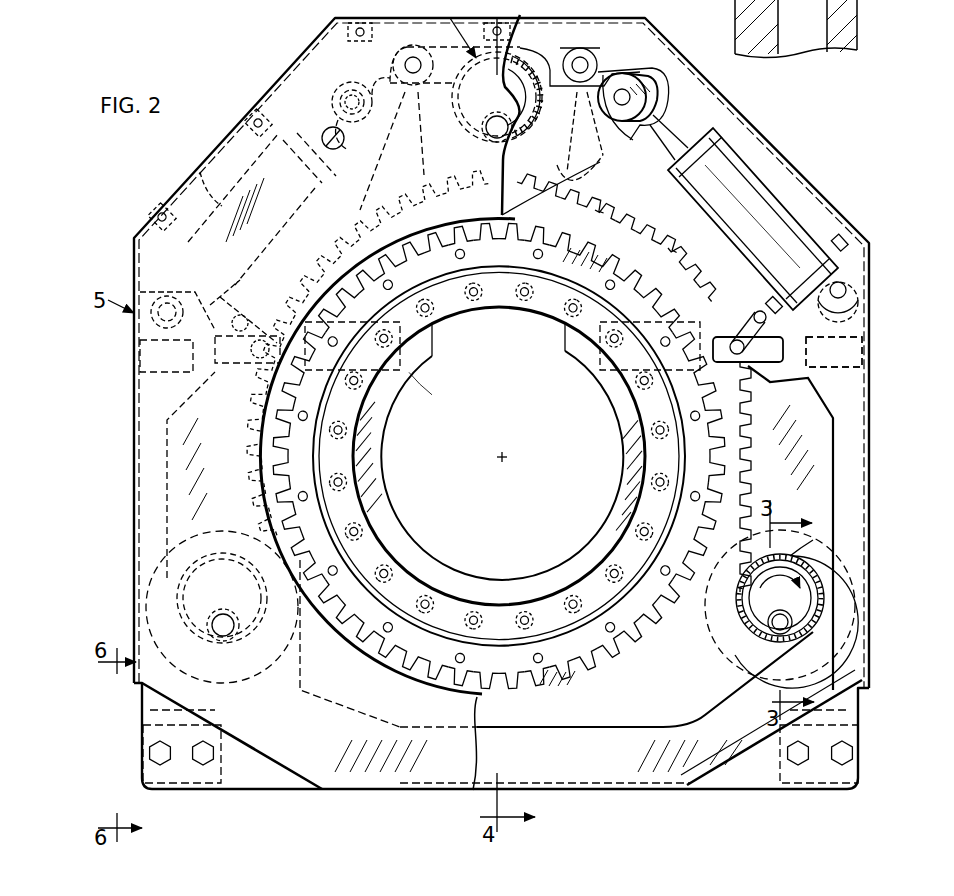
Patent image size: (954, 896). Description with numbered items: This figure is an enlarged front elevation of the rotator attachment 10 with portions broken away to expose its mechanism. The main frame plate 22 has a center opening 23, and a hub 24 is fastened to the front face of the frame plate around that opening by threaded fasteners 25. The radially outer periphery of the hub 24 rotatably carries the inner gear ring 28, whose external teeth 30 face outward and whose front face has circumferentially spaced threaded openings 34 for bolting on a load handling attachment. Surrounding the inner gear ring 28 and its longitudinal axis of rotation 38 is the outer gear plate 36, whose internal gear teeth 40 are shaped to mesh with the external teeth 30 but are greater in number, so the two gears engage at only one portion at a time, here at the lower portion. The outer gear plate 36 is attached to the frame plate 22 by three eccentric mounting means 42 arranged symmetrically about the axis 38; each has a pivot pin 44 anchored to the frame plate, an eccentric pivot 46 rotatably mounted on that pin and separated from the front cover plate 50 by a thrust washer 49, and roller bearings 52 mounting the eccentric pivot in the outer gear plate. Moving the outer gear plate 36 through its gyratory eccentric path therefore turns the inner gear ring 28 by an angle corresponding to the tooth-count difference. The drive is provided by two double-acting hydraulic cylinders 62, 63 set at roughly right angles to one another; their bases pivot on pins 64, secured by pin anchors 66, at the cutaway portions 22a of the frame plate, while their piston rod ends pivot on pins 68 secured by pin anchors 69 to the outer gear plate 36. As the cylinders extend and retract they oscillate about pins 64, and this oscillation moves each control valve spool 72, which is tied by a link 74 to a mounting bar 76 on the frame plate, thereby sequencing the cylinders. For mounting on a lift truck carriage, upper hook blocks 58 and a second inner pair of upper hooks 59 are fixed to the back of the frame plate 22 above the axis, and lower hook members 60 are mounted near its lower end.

The rotator attachment 10 is at (266, 87).
The main frame plate 22 is at (240, 792).
The cutaway portions of frame plate 22a is at (758, 398).
The center opening 23 is at (522, 578).
The hub 24 is at (464, 600).
The threaded fasteners 25 is at (395, 516).
The inner gear ring 28 is at (590, 672).
The external teeth 30 is at (468, 680).
The threaded openings 34 is at (530, 240).
The outer gear plate 36 is at (576, 730).
The longitudinal axis of rotation 38 is at (497, 457).
The internal gear teeth 40 is at (556, 680).
The eccentric mounting means 42 is at (218, 550).
The pivot pin 44 is at (490, 127).
The eccentric pivot 46 is at (848, 602).
The thrust washer 49 is at (306, 686).
The front cover plate 50 is at (296, 792).
The roller bearings 52 is at (541, 114).
The upper hook blocks 58 is at (140, 352).
The upper hooks 59 is at (406, 383).
The lower hook members 60 is at (142, 708).
The double-acting hydraulic cylinder 62 is at (200, 172).
The double-acting hydraulic cylinder 63 is at (797, 203).
The pins 64 is at (138, 284).
The pin anchors 66 is at (858, 296).
The pins 68 is at (314, 52).
The pin anchors 69 is at (633, 72).
The control valve spool 72 is at (842, 245).
The link 74 is at (753, 326).
The mounting bar 76 is at (834, 351).